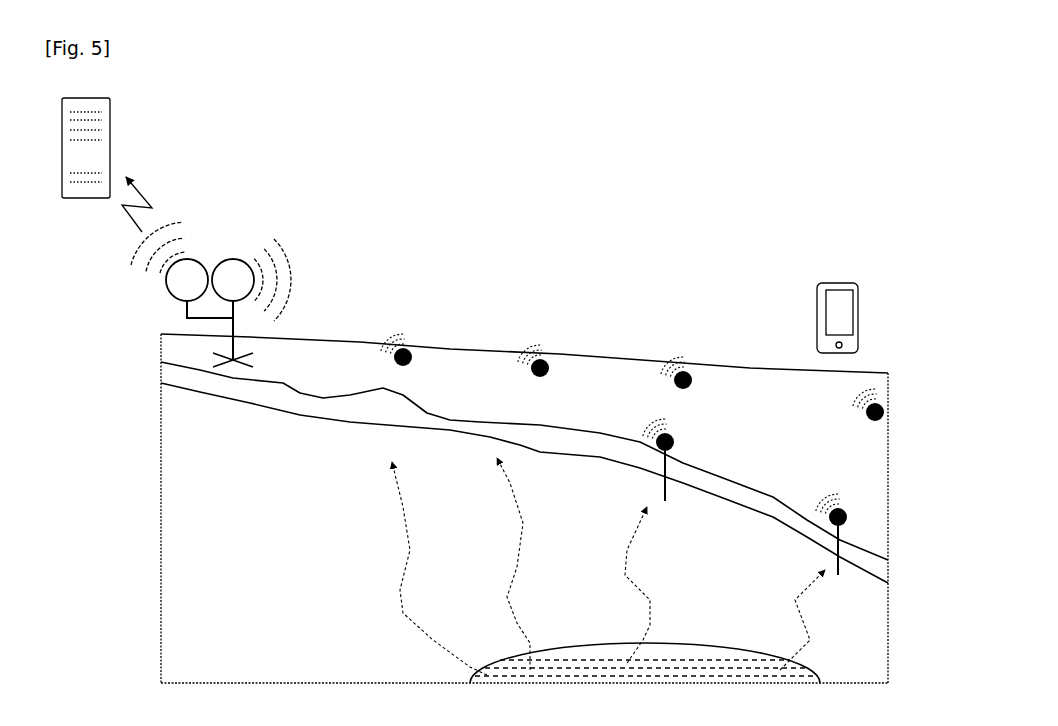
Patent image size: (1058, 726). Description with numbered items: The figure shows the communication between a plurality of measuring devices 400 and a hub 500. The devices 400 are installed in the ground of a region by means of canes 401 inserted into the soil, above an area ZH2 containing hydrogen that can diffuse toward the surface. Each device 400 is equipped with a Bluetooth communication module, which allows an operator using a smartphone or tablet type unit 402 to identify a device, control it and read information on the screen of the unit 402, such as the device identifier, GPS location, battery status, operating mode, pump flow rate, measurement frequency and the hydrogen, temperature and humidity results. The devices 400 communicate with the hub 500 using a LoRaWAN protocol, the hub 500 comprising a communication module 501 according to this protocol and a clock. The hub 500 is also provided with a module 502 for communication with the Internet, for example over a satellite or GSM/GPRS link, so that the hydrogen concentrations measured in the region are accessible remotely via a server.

The device 400 is at (632, 409).
The cane 401 is at (751, 512).
The smartphone or tablet type unit 402 is at (839, 291).
The hub 500 is at (203, 270).
The communication module 501 is at (253, 268).
The module for communication with the Internet 502 is at (160, 268).
The area containing hydrogen ZH2 is at (645, 640).